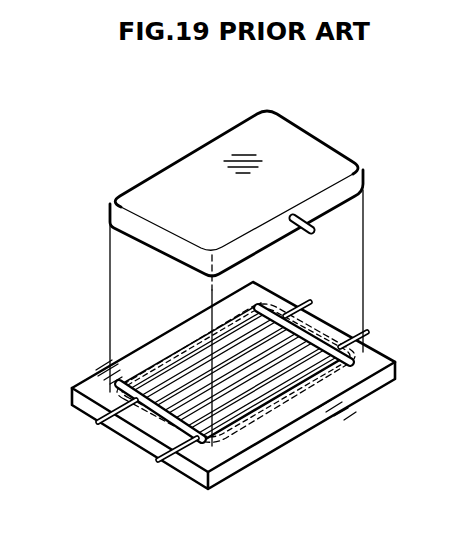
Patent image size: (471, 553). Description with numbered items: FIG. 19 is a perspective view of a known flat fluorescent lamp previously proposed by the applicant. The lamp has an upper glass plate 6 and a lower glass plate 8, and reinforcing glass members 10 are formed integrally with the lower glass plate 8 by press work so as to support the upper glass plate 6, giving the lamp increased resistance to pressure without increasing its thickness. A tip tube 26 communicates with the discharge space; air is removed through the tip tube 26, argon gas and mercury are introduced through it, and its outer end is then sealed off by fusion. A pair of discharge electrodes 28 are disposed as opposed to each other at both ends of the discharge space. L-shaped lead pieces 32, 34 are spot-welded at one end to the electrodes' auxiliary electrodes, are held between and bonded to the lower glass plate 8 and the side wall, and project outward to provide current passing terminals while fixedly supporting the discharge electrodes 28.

The upper glass plate 6 is at (307, 158).
The lower glass plate 8 is at (376, 382).
The reinforcing glass members 10 is at (272, 378).
The tip tube 26 is at (316, 226).
The discharge electrodes 28 is at (155, 412).
The lead piece 32 is at (108, 428).
The lead piece 34 is at (177, 460).